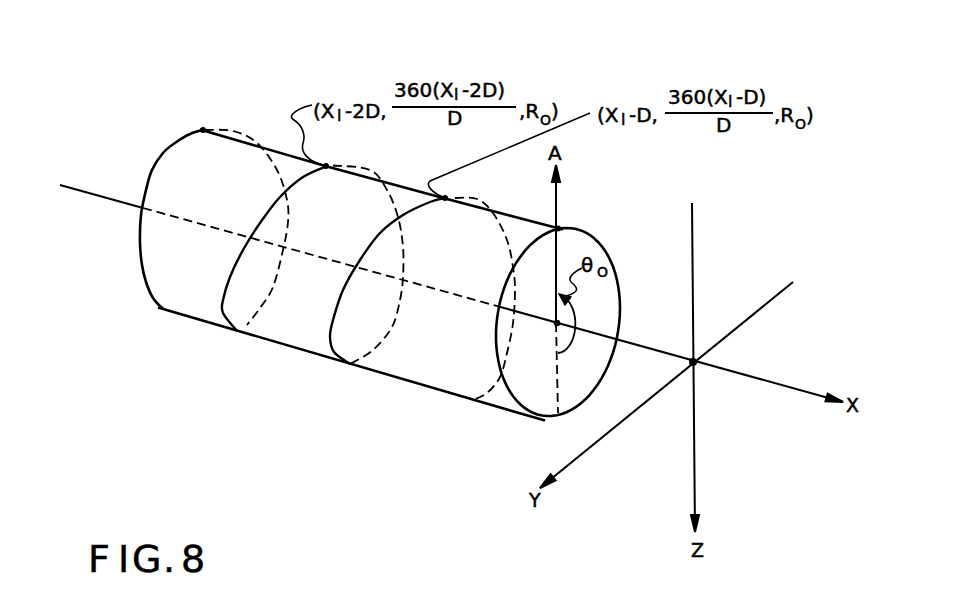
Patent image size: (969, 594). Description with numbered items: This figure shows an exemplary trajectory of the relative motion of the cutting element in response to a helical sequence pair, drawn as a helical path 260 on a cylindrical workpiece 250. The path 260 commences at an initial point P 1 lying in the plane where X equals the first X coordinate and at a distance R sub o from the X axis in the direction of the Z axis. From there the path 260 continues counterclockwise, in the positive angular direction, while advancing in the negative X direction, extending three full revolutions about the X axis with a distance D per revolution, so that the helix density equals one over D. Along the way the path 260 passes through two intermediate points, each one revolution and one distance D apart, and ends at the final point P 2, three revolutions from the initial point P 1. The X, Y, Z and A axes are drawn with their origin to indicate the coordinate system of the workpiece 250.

The workpiece 250 is at (167, 277).
The helical path 260 is at (330, 333).
The point P1 on cylinder surface 1 is at (558, 229).
The point P2 on cylinder surface 2 is at (203, 130).